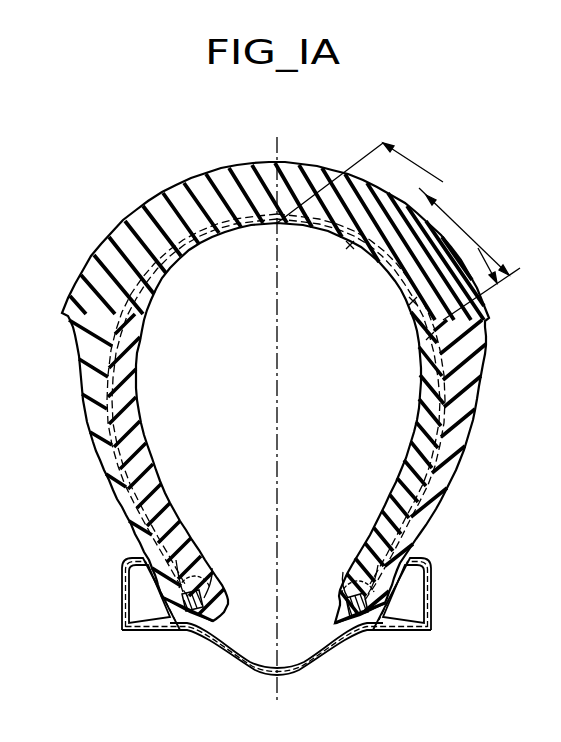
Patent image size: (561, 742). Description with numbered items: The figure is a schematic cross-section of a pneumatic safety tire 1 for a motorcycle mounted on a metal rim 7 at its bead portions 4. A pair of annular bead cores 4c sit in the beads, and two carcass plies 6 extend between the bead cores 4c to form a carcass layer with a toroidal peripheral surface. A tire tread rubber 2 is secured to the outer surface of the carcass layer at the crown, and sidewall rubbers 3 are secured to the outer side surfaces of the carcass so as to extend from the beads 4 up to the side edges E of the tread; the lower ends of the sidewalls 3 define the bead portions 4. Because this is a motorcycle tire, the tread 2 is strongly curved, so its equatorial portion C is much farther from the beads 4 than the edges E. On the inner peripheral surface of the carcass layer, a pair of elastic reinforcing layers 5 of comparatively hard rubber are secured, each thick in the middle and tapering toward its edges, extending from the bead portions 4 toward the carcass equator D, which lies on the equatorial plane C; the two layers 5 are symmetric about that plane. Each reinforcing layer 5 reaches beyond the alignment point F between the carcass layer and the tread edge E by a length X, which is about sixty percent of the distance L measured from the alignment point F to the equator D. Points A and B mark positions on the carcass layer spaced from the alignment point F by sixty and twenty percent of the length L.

The pneumatic safety tire 1 is at (100, 236).
The tire tread rubber 2 is at (175, 187).
The sidewall rubbers 3 is at (79, 346).
The bead portions 4 is at (352, 592).
The annular bead cores 4c is at (203, 580).
The elastic reinforcing layers 5 is at (138, 403).
The carcass plies 6 is at (244, 230).
The metal rim 7 is at (230, 643).
The point A of carcass layer A is at (410, 302).
The point B of carcass layer B is at (350, 245).
The equatorial portion / equatorial plane C is at (281, 160).
The carcass equator D is at (282, 228).
The side edges of the tire tread E is at (488, 309).
The alignment point F is at (432, 337).
The distance from alignment point F to equator D L is at (437, 199).
The extension length FB X is at (477, 247).